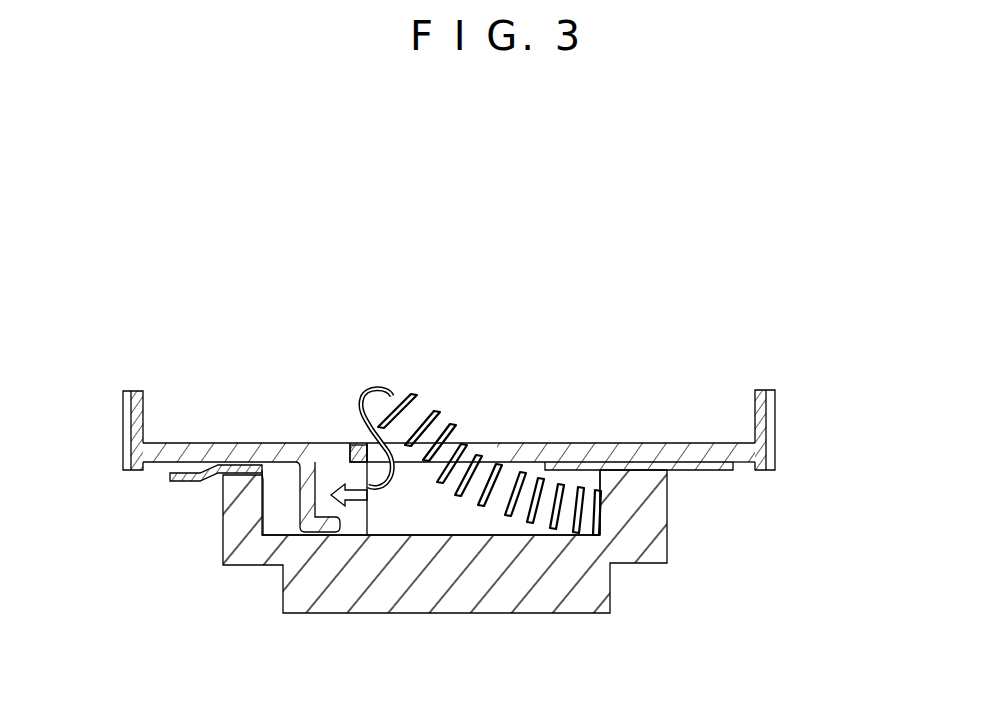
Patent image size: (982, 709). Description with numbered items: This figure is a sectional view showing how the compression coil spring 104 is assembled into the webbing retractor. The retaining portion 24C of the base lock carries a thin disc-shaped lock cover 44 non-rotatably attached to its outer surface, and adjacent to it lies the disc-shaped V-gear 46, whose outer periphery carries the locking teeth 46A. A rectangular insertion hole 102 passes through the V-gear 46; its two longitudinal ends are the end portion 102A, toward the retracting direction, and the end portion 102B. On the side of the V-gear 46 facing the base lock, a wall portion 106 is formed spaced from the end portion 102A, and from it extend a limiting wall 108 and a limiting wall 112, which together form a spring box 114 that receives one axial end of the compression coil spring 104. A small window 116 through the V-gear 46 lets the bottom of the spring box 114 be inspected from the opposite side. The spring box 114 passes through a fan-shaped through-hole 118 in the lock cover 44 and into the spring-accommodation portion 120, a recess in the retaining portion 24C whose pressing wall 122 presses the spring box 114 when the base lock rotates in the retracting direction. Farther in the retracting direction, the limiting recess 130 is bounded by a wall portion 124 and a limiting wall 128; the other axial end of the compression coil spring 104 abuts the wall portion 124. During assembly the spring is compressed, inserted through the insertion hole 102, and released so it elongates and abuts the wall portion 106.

The lock cover 44 is at (172, 480).
The V-gear 46 is at (707, 436).
The locking teeth 46A is at (782, 417).
The insertion hole 102 is at (489, 497).
The end portion 102A is at (535, 505).
The end portion 102B is at (368, 400).
The compression coil spring 104 is at (430, 392).
The wall portion 106 is at (325, 445).
The limiting wall 108 is at (350, 535).
The limiting wall 112 is at (282, 567).
The spring box 114 is at (383, 535).
The small window 116 is at (332, 445).
The through-hole 118 is at (531, 467).
The spring-accommodation portion 120 is at (426, 518).
The pressing wall 122 is at (224, 517).
The wall portion 124 is at (562, 535).
The limiting wall 128 is at (590, 480).
The limiting recess 130 is at (570, 492).
The retaining portion 24C is at (509, 547).